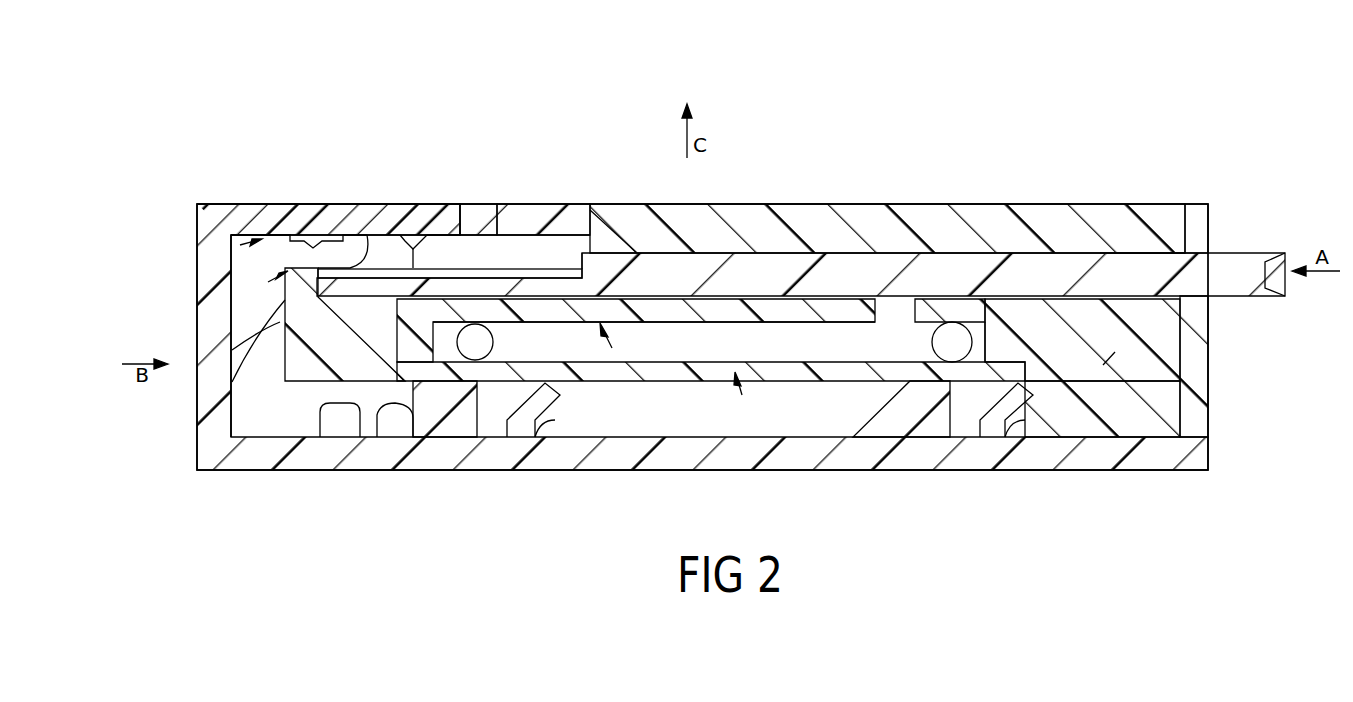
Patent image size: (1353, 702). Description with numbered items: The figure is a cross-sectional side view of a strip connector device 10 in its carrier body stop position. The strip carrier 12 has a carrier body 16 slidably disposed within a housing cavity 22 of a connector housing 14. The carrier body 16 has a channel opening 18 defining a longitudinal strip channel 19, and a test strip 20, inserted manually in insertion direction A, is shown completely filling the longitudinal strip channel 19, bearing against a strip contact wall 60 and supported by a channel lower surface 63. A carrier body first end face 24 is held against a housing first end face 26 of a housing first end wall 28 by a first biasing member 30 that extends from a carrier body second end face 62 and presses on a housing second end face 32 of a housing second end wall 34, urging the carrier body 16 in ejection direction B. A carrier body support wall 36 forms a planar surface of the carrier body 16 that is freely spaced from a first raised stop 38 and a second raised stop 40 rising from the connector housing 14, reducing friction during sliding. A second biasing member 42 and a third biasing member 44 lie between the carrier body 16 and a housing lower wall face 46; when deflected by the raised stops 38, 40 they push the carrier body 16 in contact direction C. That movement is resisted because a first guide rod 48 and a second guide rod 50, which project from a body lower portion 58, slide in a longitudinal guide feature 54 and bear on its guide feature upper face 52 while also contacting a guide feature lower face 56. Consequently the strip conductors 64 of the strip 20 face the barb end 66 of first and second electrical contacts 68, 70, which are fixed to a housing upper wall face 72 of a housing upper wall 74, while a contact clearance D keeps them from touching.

The strip connector device 10 is at (920, 114).
The strip carrier 12 is at (1000, 203).
The connector housing 14 is at (248, 462).
The carrier body 16 is at (850, 218).
The channel opening 18 is at (1195, 222).
The longitudinal strip channel 19 is at (1085, 240).
The test strip 20 is at (1240, 262).
The housing cavity 22 is at (860, 400).
The carrier body first end face 24 is at (1187, 346).
The housing first end face 26 is at (1100, 420).
The housing first end wall 28 is at (1200, 402).
The first biasing member 30 is at (245, 345).
The housing second end face 32 is at (255, 237).
The housing second end wall 34 is at (197, 275).
The carrier body support wall 36 is at (672, 383).
The first raised stop 38 is at (373, 437).
The second raised stop 40 is at (805, 420).
The second biasing member 42 is at (522, 440).
The third biasing member 44 is at (1003, 430).
The housing lower wall face 46 is at (320, 413).
The first guide rod 48 is at (477, 345).
The second guide rod 50 is at (955, 350).
The guide feature upper face 52 is at (612, 348).
The longitudinal guide feature 54 is at (640, 345).
The guide feature lower face 56 is at (742, 395).
The body lower portion 58 is at (1103, 365).
The strip contact wall 60 is at (365, 250).
The carrier body second end face 62 is at (268, 282).
The channel lower surface 63 is at (240, 375).
The strip conductors 64 is at (548, 270).
The barb end 66 is at (313, 247).
The first electrical contacts 68 is at (307, 233).
The second electrical contacts 70 is at (418, 268).
The housing upper wall face 72 is at (515, 263).
The housing upper wall 74 is at (455, 215).